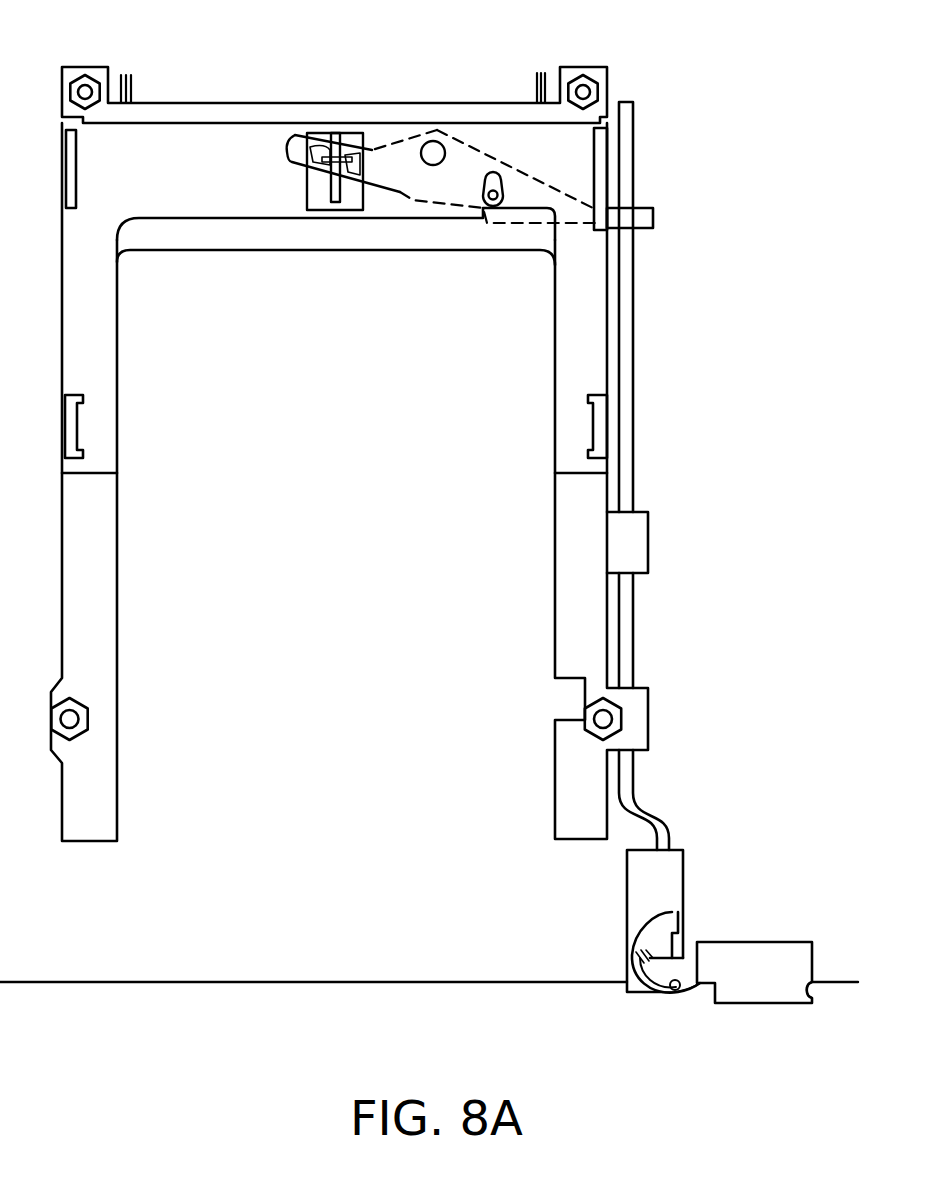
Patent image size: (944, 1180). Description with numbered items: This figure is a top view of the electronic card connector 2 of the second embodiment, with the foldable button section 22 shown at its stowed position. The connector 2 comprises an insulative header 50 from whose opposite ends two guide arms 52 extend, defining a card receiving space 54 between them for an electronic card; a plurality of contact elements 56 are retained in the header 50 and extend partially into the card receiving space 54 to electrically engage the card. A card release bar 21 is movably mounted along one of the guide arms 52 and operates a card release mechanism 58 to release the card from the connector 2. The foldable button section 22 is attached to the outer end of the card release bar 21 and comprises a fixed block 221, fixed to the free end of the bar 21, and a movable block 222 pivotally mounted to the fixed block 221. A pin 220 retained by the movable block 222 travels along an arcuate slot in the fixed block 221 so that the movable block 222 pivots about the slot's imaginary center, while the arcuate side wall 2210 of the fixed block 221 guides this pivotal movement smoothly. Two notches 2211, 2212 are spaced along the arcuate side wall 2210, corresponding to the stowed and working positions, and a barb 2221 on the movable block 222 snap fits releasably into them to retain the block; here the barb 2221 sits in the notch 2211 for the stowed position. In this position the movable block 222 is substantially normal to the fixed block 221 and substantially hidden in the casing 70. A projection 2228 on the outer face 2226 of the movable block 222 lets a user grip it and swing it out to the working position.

The electronic card connector 2 is at (711, 44).
The card release bar 21 is at (627, 643).
The foldable button section 22 is at (684, 942).
The insulative header 50 is at (92, 72).
The guide arms 52 is at (97, 595).
The card receiving space 54 is at (350, 483).
The contact elements 56 is at (133, 74).
The card release mechanism 58 is at (407, 203).
The casing 70 is at (358, 986).
The pin 220 is at (675, 990).
The fixed block 221 is at (632, 862).
The movable block 222 is at (743, 962).
The arcuate side wall 2210 is at (627, 923).
The notch 2211 is at (630, 953).
The notch 2212 is at (680, 918).
The barb 2221 is at (627, 988).
The outer face 2226 is at (812, 955).
The projection 2228 is at (813, 1007).